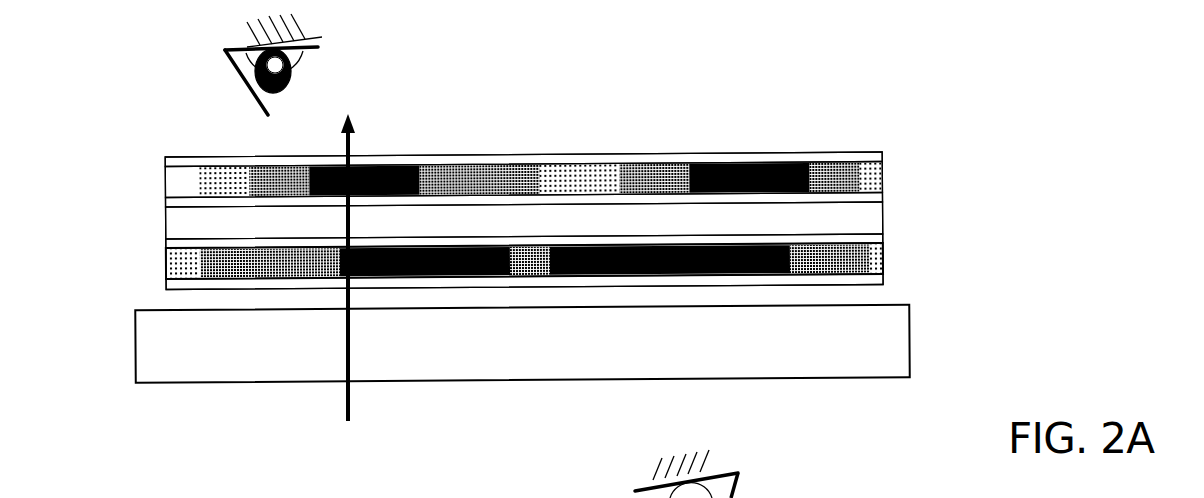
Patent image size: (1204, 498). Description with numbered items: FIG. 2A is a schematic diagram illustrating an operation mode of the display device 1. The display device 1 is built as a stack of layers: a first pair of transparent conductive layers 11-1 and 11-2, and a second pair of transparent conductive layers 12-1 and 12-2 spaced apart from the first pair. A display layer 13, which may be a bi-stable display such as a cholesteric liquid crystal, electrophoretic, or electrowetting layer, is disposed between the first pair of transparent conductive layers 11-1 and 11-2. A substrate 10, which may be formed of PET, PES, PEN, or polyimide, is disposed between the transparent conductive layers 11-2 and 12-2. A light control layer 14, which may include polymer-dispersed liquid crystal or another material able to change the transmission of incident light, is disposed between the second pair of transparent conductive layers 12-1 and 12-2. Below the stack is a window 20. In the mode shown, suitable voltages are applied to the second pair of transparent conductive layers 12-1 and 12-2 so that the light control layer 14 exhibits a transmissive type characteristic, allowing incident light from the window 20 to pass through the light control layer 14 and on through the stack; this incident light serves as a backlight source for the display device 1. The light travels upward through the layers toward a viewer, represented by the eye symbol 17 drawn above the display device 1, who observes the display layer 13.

The display device 1 is at (133, 218).
The viewer / observer 17 is at (242, 76).
The transparent conductive layer 11-1 is at (883, 156).
The display layer 13 is at (553, 190).
The transparent conductive layer 11-2 is at (883, 196).
The substrate 10 is at (553, 230).
The transparent conductive layer 12-2 is at (883, 237).
The light control layer 14 is at (553, 272).
The transparent conductive layer 12-1 is at (883, 277).
The window 20 is at (909, 345).